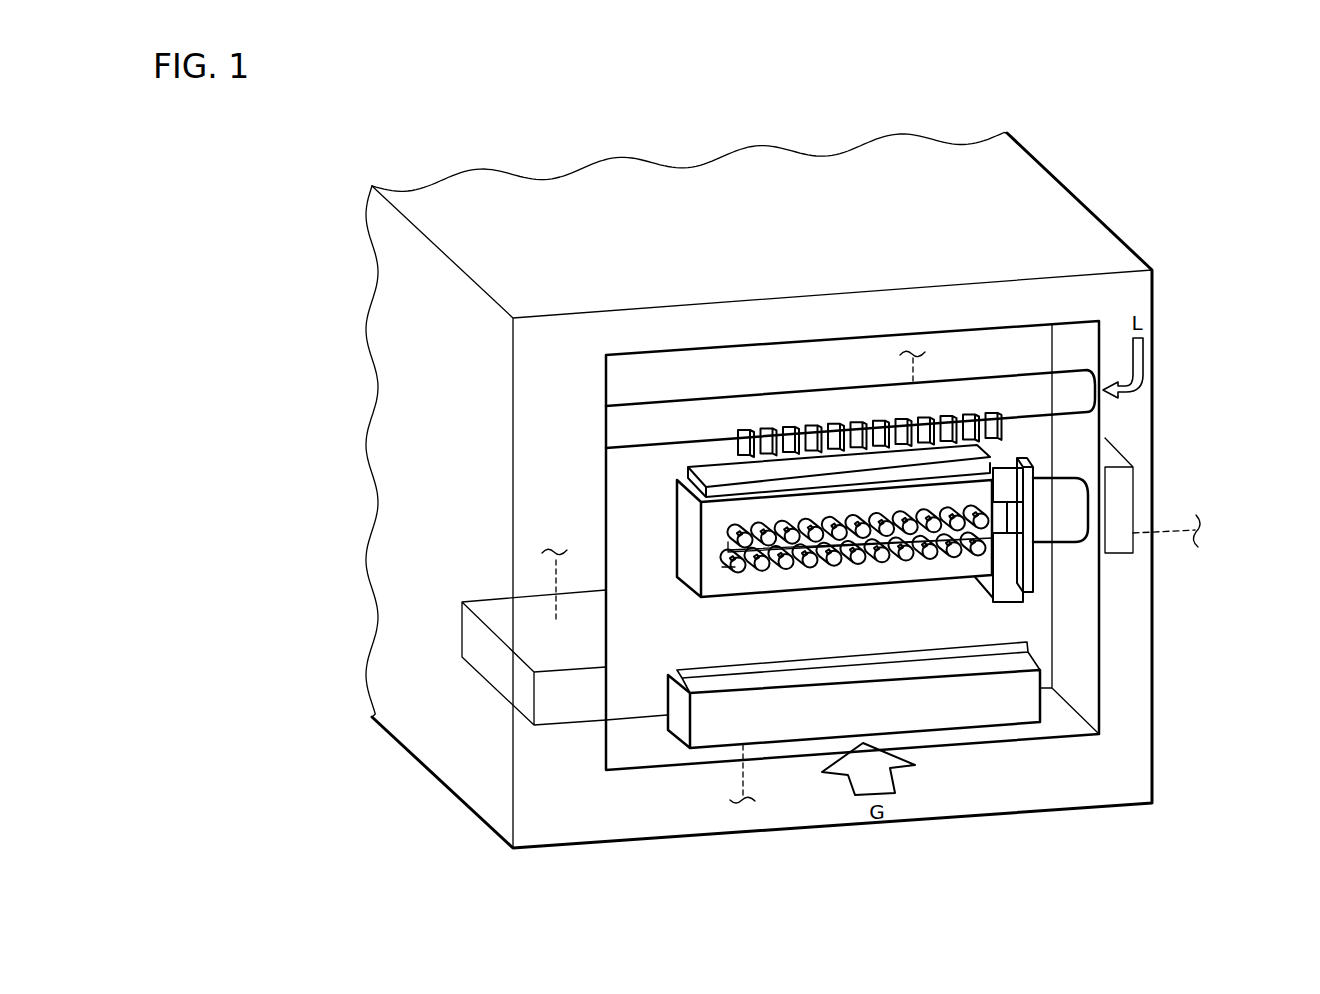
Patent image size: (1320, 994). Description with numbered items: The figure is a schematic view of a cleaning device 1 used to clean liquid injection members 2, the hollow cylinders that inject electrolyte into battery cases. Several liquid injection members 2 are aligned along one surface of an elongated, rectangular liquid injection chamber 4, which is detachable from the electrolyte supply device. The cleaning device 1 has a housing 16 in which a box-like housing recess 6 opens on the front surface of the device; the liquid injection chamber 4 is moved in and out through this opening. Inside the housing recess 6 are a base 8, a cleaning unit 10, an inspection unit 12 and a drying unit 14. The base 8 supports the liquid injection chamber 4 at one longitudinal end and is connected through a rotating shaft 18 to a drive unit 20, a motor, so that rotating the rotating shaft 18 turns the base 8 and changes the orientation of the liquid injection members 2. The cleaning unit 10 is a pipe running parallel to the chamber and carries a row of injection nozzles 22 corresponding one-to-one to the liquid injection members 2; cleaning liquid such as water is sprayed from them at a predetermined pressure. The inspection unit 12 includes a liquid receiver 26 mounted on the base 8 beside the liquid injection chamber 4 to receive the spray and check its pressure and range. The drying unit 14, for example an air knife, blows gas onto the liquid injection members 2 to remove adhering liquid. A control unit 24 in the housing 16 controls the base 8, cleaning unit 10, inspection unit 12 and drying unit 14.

The cleaning device 1 is at (866, 890).
The liquid injection member 2 is at (960, 552).
The liquid injection chamber 4 is at (958, 580).
The housing recess 6 is at (1080, 673).
The base 8 is at (1028, 462).
The cleaning unit 10 is at (1034, 372).
The inspection unit 12 is at (632, 480).
The drying unit 14 is at (1043, 706).
The housing 16 is at (1154, 792).
The rotating shaft 18 is at (1067, 478).
The drive unit 20 is at (1133, 492).
The injection nozzles 22 is at (984, 412).
The control unit 24 is at (560, 725).
The liquid receiver 26 is at (700, 465).